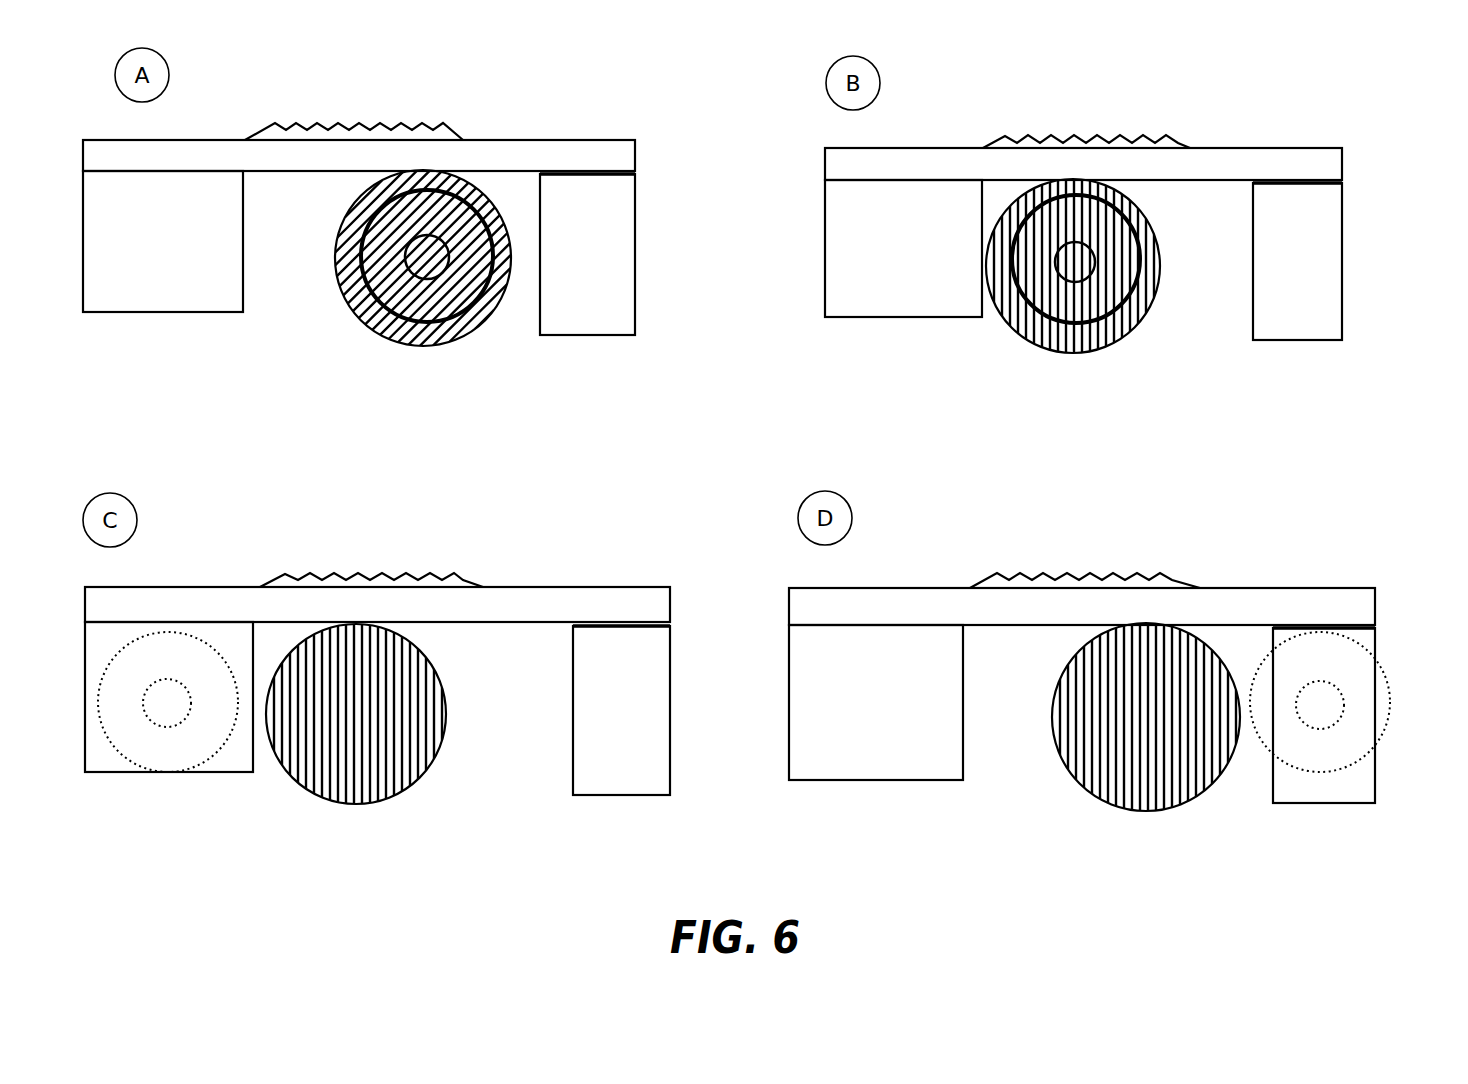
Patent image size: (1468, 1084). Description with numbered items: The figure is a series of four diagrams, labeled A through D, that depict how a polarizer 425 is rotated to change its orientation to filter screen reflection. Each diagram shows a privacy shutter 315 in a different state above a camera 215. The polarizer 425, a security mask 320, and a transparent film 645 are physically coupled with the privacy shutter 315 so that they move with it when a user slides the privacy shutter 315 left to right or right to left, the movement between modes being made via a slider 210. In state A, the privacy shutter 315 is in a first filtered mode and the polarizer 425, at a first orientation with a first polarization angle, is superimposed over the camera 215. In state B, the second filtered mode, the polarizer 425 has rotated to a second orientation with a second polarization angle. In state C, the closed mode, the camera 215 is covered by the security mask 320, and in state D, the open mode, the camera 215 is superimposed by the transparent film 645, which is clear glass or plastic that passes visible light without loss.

The slider 210 is at (458, 138).
The camera 215 is at (492, 214).
The privacy shutter 315 is at (168, 140).
The security mask 320 is at (155, 313).
The polarizer 425 is at (432, 344).
The transparent film 645 is at (635, 232).